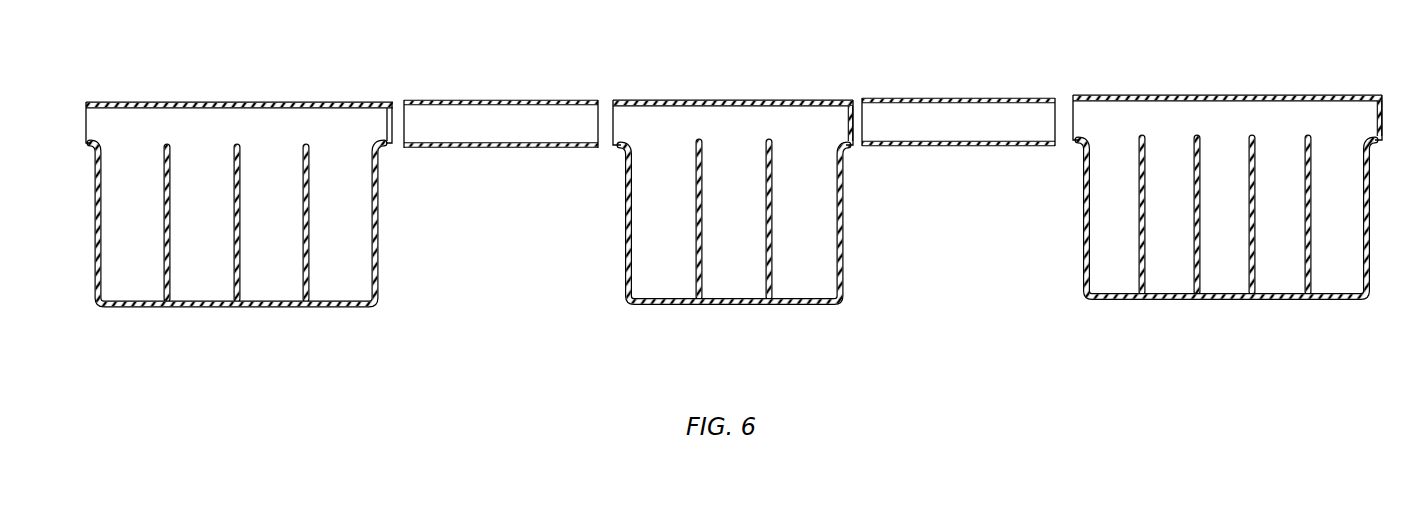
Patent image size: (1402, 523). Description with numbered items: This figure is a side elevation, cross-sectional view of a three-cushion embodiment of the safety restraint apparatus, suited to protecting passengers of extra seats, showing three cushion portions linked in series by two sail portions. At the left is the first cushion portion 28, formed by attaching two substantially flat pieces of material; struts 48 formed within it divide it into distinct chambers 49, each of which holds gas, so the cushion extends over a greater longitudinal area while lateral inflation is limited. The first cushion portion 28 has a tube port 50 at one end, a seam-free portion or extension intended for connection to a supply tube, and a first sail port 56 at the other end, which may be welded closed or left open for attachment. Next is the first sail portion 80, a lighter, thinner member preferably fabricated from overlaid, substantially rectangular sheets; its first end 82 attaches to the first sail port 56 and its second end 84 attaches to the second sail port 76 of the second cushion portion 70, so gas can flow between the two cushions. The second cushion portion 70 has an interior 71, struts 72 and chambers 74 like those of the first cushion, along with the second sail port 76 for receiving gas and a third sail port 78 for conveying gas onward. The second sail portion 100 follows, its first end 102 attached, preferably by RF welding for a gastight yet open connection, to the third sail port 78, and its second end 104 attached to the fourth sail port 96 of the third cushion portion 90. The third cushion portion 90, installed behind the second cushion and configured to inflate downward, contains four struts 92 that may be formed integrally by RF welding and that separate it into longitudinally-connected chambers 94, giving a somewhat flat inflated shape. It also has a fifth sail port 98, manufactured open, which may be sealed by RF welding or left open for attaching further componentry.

The first cushion portion 28 is at (266, 90).
The struts 48 is at (170, 275).
The chambers 49 is at (150, 202).
The tube port 50 is at (94, 115).
The first sail port 56 is at (374, 115).
The second cushion portion 70 is at (740, 88).
The interior 71 is at (776, 113).
The struts 72 is at (702, 245).
The chambers 74 is at (685, 212).
The second sail port 76 is at (620, 113).
The third sail port 78 is at (833, 115).
The first sail portion 80 is at (521, 92).
The first end 82 is at (419, 130).
The second end 84 is at (570, 130).
The third cushion portion 90 is at (1252, 82).
The struts 92 is at (1364, 264).
The chambers 94 is at (1130, 155).
The fourth sail port 96 is at (1080, 108).
The fifth sail port 98 is at (1362, 110).
The second sail portion 100 is at (981, 92).
The first end 102 is at (876, 128).
The second end 104 is at (1027, 128).